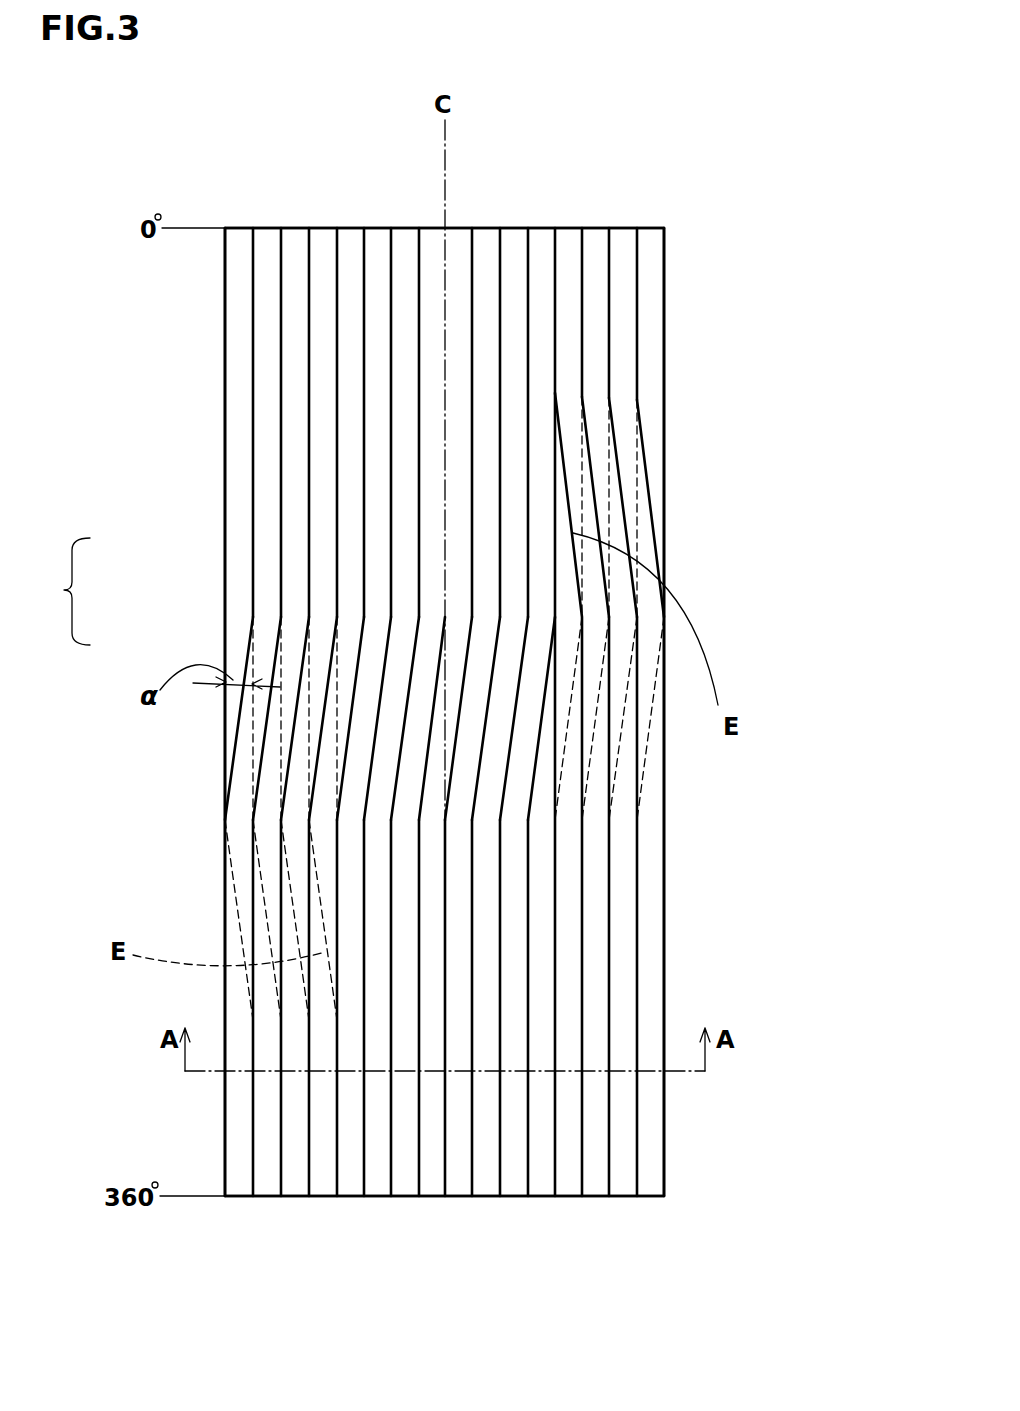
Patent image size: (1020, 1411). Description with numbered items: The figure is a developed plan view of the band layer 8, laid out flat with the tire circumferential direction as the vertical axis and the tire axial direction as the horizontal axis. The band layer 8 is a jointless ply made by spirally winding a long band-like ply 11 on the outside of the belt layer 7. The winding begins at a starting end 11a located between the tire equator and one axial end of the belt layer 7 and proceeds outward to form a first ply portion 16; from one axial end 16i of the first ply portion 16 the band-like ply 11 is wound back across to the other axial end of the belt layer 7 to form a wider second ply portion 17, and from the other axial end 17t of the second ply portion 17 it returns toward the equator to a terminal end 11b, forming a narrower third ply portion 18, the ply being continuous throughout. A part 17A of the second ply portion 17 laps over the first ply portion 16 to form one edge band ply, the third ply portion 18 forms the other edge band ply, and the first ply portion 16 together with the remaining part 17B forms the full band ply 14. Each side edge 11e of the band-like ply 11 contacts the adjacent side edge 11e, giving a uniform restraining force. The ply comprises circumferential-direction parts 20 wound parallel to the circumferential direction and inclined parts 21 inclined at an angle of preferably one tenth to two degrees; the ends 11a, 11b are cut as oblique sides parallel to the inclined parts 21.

The belt layer 7 is at (668, 245).
The band layer 8 is at (250, 1209).
The band-like ply 11 is at (514, 1133).
The starting end 11a is at (320, 897).
The terminal end 11b is at (557, 433).
The side edge 11e is at (555, 330).
The full band ply 14 is at (63, 591).
The first ply portion 16 is at (300, 583).
The one axial end of first ply portion 16i is at (225, 362).
The second ply portion 17 is at (513, 381).
The part of second ply portion 17A is at (240, 432).
The part of second ply portion 17B is at (435, 418).
The other axial end of second ply portion 17t is at (665, 301).
The third ply portion 18 is at (649, 373).
The circumferential-direction part 20 is at (323, 263).
The inclined part 21 is at (775, 950).